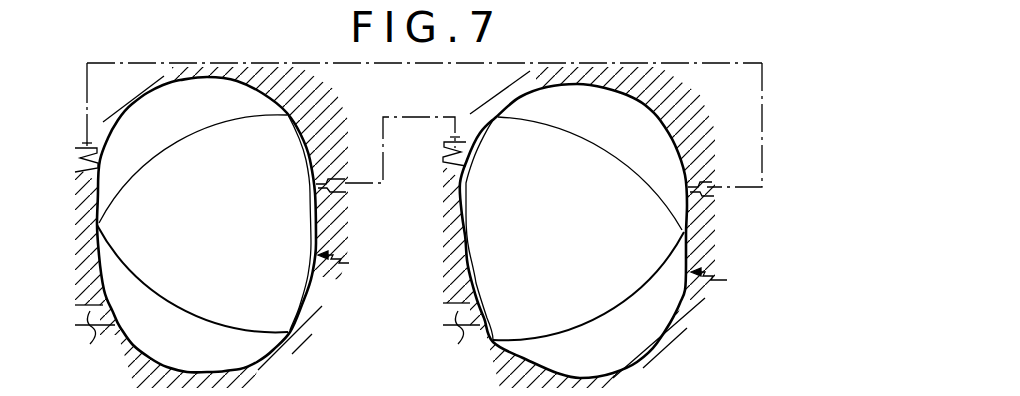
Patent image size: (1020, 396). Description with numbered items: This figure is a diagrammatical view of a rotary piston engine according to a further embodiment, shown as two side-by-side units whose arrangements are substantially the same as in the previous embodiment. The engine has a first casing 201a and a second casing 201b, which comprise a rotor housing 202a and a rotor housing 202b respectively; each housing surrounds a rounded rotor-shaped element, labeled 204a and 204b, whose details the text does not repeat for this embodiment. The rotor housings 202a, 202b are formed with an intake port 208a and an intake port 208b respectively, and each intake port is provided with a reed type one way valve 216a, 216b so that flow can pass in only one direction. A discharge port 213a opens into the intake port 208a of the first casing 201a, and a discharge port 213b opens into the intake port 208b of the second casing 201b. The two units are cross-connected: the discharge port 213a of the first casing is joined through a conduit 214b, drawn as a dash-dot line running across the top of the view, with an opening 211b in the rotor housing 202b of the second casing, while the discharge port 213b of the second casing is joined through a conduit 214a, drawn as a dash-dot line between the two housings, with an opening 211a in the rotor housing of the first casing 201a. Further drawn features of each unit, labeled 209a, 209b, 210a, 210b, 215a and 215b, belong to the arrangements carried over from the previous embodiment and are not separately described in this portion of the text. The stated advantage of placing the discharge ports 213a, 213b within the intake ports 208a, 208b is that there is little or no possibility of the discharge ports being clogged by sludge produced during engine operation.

The first casing 201a is at (304, 107).
The second casing 201b is at (669, 109).
The rotor housing 202a is at (263, 86).
The rotor housing 202b is at (620, 90).
The ball 204a is at (251, 224).
The ball 204b is at (603, 238).
The intake port 208a is at (88, 175).
The intake port 208b is at (472, 168).
The break line 209a is at (95, 343).
The break line 209b is at (456, 343).
The arrow indicator 210a is at (348, 264).
The arrow indicator 210b is at (726, 281).
The opening 211a is at (318, 184).
The opening 211b is at (692, 178).
The discharge port 213a is at (100, 150).
The discharge port 213b is at (474, 160).
The conduit 214a is at (385, 116).
The conduit 214b is at (602, 63).
The terminal 215a is at (333, 190).
The terminal 215b is at (712, 192).
The reed type one way valve 216a is at (77, 157).
The reed type one way valve 216b is at (446, 160).